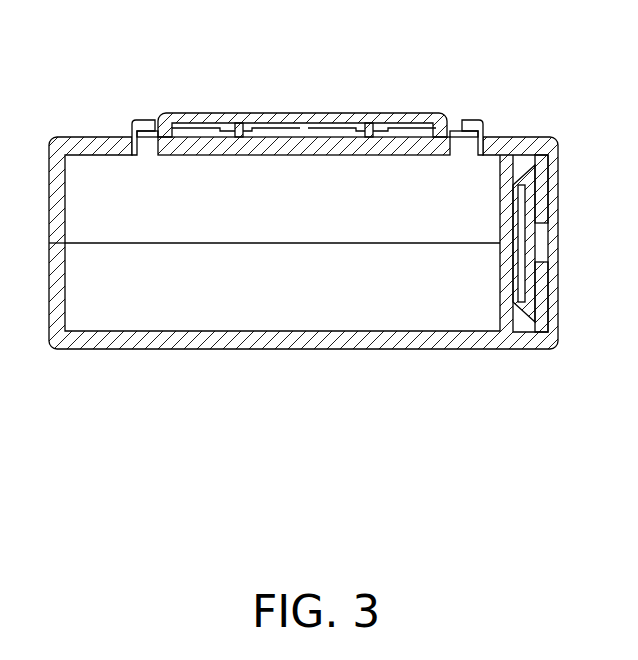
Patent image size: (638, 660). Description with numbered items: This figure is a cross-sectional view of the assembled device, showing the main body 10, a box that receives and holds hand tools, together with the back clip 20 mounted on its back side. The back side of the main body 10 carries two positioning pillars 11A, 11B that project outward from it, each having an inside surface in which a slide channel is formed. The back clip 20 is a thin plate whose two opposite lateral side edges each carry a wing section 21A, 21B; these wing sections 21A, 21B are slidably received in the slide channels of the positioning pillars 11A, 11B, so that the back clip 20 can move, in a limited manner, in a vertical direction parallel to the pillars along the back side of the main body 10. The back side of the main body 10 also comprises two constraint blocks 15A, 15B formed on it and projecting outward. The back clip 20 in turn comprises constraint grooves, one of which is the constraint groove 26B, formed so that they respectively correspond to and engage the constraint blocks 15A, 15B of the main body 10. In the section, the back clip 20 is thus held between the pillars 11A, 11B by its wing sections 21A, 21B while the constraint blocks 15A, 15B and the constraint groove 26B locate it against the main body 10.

The main body 10 is at (302, 349).
The back clip 20 is at (303, 113).
The positioning pillar 11A is at (465, 118).
The positioning pillar 11B is at (142, 118).
The constraint block 15A is at (370, 135).
The constraint block 15B is at (236, 135).
The wing section 21A is at (458, 137).
The wing section 21B is at (142, 137).
The constraint groove 26B is at (238, 113).